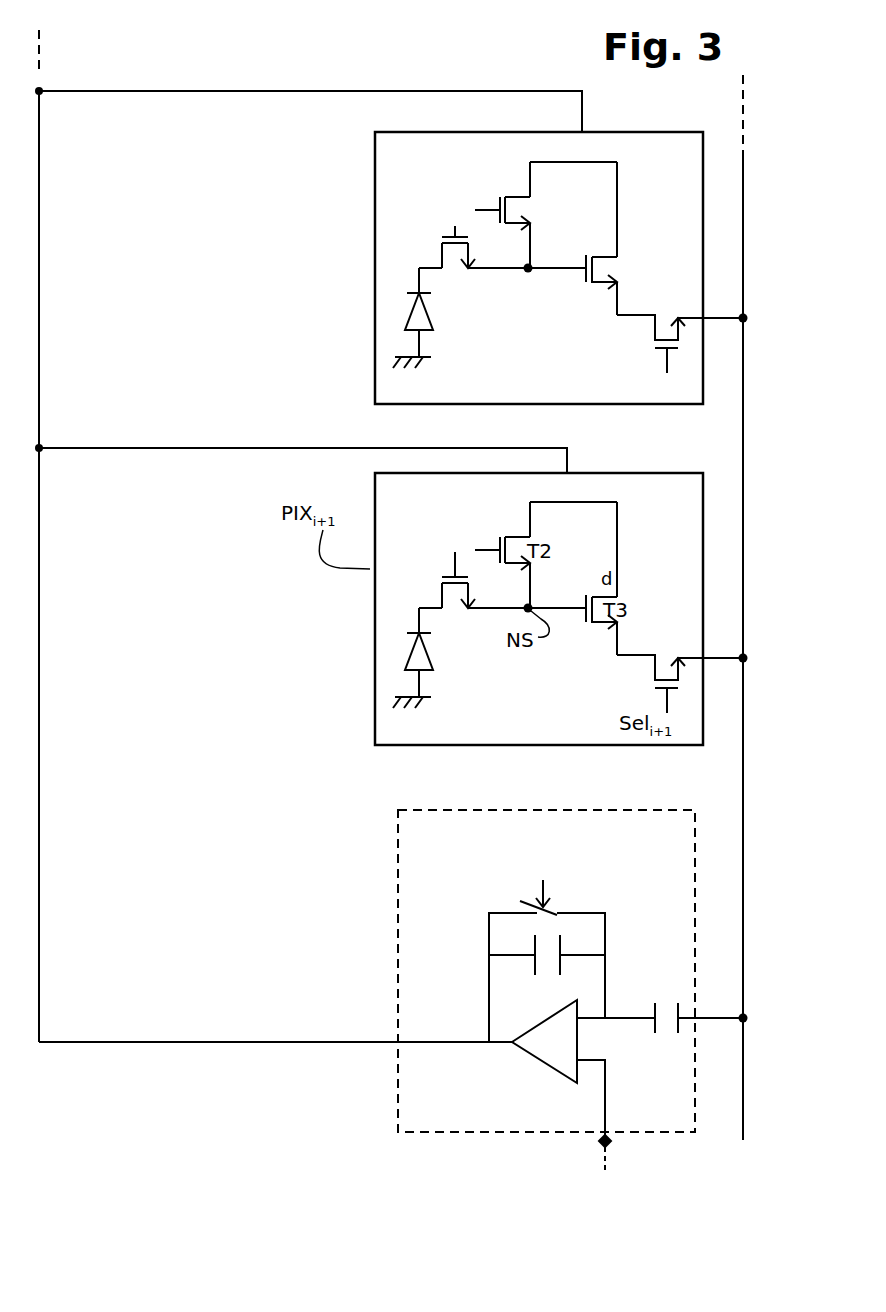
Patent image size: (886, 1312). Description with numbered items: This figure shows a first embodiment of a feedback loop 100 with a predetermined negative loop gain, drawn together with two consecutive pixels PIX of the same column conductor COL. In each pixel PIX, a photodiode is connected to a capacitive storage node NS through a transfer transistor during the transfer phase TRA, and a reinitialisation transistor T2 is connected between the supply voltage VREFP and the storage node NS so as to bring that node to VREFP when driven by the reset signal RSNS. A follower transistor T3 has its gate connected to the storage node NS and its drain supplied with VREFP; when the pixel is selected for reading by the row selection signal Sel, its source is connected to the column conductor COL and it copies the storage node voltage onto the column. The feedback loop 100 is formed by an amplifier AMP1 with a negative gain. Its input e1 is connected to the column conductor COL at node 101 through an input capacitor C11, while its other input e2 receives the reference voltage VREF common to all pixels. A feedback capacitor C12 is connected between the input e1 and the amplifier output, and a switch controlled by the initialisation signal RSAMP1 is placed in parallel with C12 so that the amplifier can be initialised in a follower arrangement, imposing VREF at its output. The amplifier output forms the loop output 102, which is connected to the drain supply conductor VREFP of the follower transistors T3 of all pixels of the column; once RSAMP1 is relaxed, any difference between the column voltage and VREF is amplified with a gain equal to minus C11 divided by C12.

The feedback loop 100 is at (398, 908).
The input node of amplification stage 101 is at (710, 1018).
The output of the loop 102 is at (380, 1042).
The reinitialisation transistor T2 is at (513, 232).
The follower transistor T3 is at (607, 271).
The transfer phase TRA is at (440, 240).
The capacitive storage node NS is at (531, 271).
The row selection signal Sel is at (680, 357).
The pixel PIX is at (370, 250).
The column conductor COL is at (743, 175).
The input capacitor C11 is at (696, 1004).
The feedback capacitor C12 is at (515, 971).
The amplifier AMP1 is at (433, 1132).
The sense node reset signal RSNS is at (465, 193).
The initialisation signal RSAMP1 is at (550, 880).
The amplifier input e1 is at (616, 1008).
The other amplifier input e2 is at (591, 1091).
The supply voltage VREFP is at (308, 536).
The reference voltage VREF is at (608, 1168).